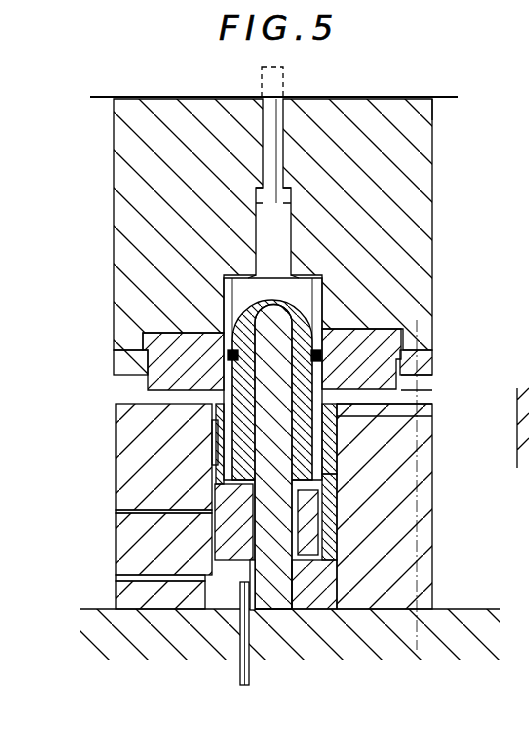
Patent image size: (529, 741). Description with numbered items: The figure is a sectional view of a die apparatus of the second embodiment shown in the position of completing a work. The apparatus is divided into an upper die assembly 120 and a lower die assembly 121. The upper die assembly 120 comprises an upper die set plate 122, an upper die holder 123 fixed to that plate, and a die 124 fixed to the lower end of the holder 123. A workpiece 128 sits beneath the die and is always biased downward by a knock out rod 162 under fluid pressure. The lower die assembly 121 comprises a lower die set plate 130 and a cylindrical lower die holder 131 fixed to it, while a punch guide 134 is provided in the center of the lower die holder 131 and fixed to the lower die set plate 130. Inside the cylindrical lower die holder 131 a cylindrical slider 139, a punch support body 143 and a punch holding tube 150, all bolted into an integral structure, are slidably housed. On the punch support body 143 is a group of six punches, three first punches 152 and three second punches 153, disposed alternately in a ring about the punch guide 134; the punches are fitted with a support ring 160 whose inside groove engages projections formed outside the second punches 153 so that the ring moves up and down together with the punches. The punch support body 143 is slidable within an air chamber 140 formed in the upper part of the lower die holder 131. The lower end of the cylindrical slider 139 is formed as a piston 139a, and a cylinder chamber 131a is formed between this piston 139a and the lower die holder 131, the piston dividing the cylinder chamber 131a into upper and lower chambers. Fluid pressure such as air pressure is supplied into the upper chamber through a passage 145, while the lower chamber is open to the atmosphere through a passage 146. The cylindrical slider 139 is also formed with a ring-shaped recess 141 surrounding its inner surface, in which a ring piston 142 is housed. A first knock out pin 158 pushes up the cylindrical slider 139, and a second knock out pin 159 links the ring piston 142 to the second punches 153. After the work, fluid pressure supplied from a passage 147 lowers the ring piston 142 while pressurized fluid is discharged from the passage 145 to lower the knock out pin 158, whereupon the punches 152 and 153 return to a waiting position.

The upper die assembly 120 is at (103, 197).
The lower die assembly 121 is at (103, 470).
The upper die set plate 122 is at (442, 100).
The upper die holder 123 is at (420, 197).
The die 124 is at (420, 386).
The workpiece 128 is at (228, 282).
The lower die set plate 130 is at (456, 610).
The lower die holder 131 is at (118, 424).
The cylinder chamber 131a is at (337, 538).
The punch guide 134 is at (300, 327).
The cylindrical slider 139 is at (218, 546).
The piston 139a is at (348, 585).
The air chamber 140 is at (340, 450).
The ring-shaped recess 141 is at (320, 508).
The ring piston 142 is at (296, 600).
The punch support body 143 is at (220, 474).
The passage 145 is at (213, 518).
The passage 146 is at (208, 577).
The passage 147 is at (433, 416).
The punch holding tube 150 is at (322, 393).
The first punches 152 is at (425, 349).
The second punches 153 is at (226, 313).
The first knock out pin 158 is at (242, 660).
The second knock out pin 159 is at (268, 565).
The support ring 160 is at (232, 354).
The knock out rod 162 is at (277, 122).